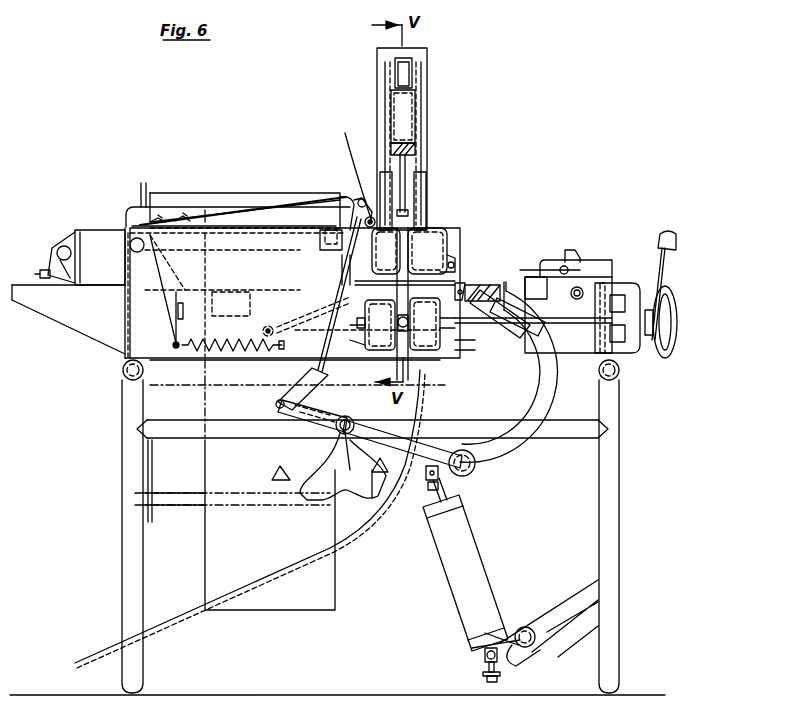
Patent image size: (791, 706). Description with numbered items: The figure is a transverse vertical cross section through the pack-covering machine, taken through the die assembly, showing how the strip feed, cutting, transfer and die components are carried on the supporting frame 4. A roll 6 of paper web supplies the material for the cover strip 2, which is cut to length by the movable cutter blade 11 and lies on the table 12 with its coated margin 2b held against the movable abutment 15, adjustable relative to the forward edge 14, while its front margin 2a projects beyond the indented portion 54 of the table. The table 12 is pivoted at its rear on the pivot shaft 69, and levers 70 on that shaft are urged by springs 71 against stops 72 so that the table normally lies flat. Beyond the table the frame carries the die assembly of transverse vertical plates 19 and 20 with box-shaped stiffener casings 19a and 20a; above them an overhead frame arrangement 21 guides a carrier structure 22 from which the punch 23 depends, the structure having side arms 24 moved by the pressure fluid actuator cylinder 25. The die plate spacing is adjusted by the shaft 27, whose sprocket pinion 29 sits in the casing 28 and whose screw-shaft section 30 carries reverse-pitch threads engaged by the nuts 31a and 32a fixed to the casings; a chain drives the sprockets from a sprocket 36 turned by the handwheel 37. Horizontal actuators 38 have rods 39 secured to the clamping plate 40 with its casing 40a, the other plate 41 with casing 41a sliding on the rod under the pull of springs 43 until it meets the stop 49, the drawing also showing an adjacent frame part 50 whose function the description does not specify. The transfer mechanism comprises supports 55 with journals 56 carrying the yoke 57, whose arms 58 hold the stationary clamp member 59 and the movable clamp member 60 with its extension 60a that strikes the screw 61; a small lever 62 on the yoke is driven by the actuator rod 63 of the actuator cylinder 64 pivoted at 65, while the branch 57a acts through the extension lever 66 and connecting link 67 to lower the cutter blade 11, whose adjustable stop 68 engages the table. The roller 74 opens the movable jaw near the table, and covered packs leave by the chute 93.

The cover strip 2 is at (298, 216).
The front margin of cover strip 2a is at (336, 205).
The coated margin of cover strip 2b is at (226, 222).
The supporting frame 4 is at (612, 530).
The roll of paper web 6 is at (335, 604).
The movable cutter blade 11 is at (256, 205).
The table 12 is at (276, 218).
The forward edge of table 14 is at (336, 250).
The movable abutment 15 is at (202, 215).
The die plate 19 is at (403, 340).
The stiffener casing 19a is at (362, 344).
The die plate 20 is at (430, 352).
The stiffener casing 20a is at (483, 337).
The overhead frame arrangement 21 is at (412, 76).
The carrier structure 22 is at (407, 112).
The punch 23 is at (406, 196).
The vertical side arm 24 is at (420, 165).
The pressure fluid actuator cylinder 25 is at (427, 125).
The shaft 27 is at (592, 325).
The casing 28 is at (636, 356).
The sprocket pinion 29 is at (654, 330).
The screw-shaft section 30 is at (410, 355).
The nut 31a is at (357, 330).
The nut 32a is at (458, 362).
The sprocket 36 is at (618, 354).
The handwheel 37 is at (667, 360).
The pressure fluid actuator 38 is at (97, 233).
The actuator rod 39 is at (407, 232).
The clamping plate 40 is at (432, 240).
The stiffening casing 40a is at (482, 280).
The clamping plate 41 is at (369, 218).
The stiffener casing 41a is at (346, 290).
The spring 43 is at (449, 262).
The stop 49 is at (572, 250).
The table 50 is at (600, 262).
The indented portion of table 54 is at (322, 238).
The support 55 is at (290, 412).
The journal 56 is at (330, 490).
The yoke 57 is at (500, 460).
The branch of yoke 57a is at (418, 450).
The arm 58 is at (516, 455).
The stationary clamp member 59 is at (472, 302).
The movable clamp member 60 is at (482, 288).
The extension of movable clamp member 60a is at (492, 292).
The screw 61 is at (538, 334).
The small lever 62 is at (462, 476).
The actuator rod 63 is at (437, 500).
The actuator cylinder 64 is at (470, 566).
The pivot 65 is at (482, 653).
The extension lever 66 is at (320, 430).
The connecting link 67 is at (290, 358).
The adjustable stop 68 is at (170, 218).
The pivot shaft 69 is at (128, 247).
The lever 70 is at (160, 302).
The spring 71 is at (185, 356).
The stop 72 is at (178, 318).
The roller 74 is at (351, 169).
The chute 93 is at (350, 542).